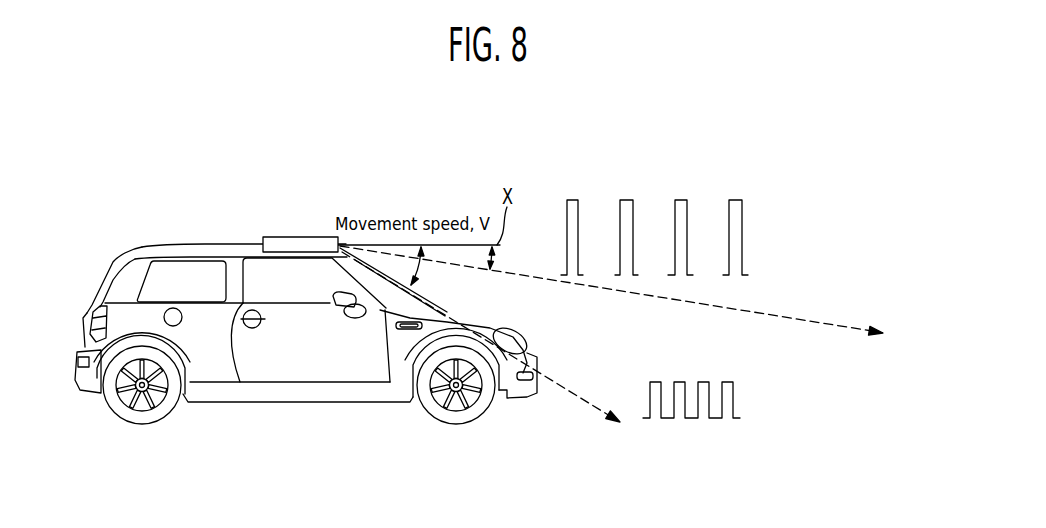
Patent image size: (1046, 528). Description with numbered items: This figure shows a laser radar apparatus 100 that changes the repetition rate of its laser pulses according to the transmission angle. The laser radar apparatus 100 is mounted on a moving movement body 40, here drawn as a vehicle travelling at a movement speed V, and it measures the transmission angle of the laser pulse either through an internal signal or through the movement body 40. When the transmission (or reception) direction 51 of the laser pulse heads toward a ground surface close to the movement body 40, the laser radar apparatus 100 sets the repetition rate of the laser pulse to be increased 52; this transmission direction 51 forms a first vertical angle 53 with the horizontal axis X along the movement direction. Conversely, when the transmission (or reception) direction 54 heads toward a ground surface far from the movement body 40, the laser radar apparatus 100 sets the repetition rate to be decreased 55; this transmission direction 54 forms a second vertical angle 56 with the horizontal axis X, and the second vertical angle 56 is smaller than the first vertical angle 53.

The movement body 40 is at (300, 403).
The laser radar apparatus 100 is at (301, 237).
The transmission direction of the laser pulse 51 is at (560, 382).
The increased repetition rate 52 is at (726, 382).
The first vertical angle 53 is at (420, 270).
The transmission direction of the laser pulse 54 is at (797, 320).
The decreased repetition rate 55 is at (736, 200).
The second vertical angle 56 is at (495, 257).